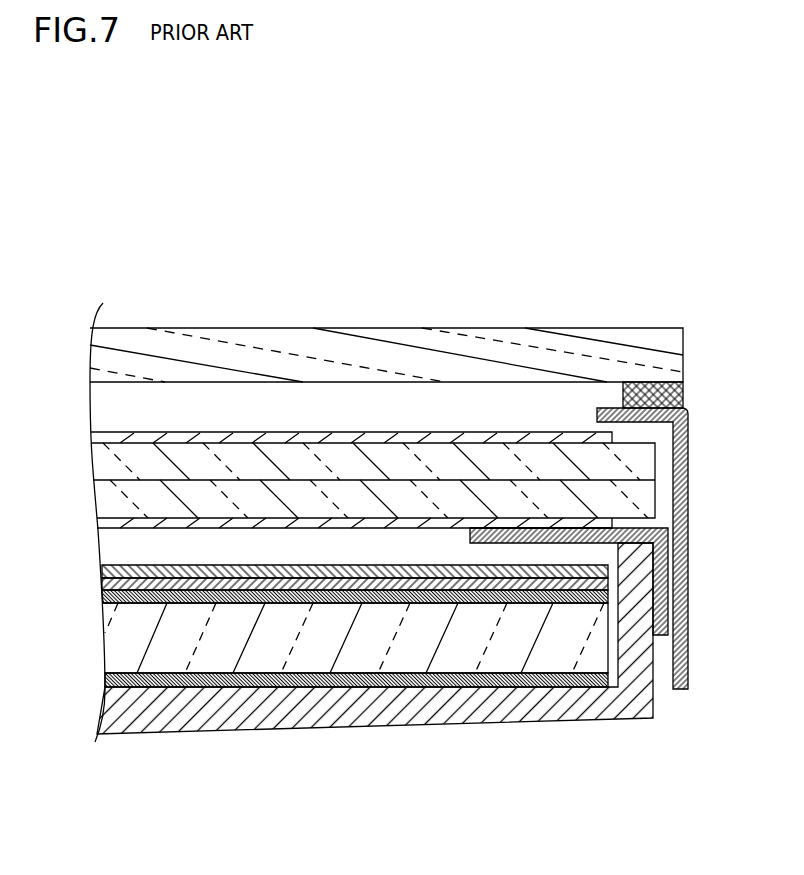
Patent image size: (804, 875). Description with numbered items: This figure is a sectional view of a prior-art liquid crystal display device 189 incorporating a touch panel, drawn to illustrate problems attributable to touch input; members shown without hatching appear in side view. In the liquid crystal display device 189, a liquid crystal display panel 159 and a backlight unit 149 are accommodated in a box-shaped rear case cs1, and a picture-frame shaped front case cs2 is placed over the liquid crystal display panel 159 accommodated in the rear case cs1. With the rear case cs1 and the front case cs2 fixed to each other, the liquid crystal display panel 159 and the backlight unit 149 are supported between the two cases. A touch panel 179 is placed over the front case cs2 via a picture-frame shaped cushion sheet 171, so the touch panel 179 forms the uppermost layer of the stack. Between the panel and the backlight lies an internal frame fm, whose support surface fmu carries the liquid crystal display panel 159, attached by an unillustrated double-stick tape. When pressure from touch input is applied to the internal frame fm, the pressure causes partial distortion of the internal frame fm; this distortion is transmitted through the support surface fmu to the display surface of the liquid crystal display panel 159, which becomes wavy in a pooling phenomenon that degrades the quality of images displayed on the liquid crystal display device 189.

The liquid crystal display device 189 is at (162, 261).
The touch panel 179 is at (94, 355).
The cushion sheet 171 is at (622, 390).
The front case cs2 is at (597, 412).
The liquid crystal display panel 159 is at (84, 425).
The internal frame fm is at (498, 543).
The support surface fmu is at (464, 532).
The backlight unit 149 is at (86, 562).
The rear case cs1 is at (107, 702).